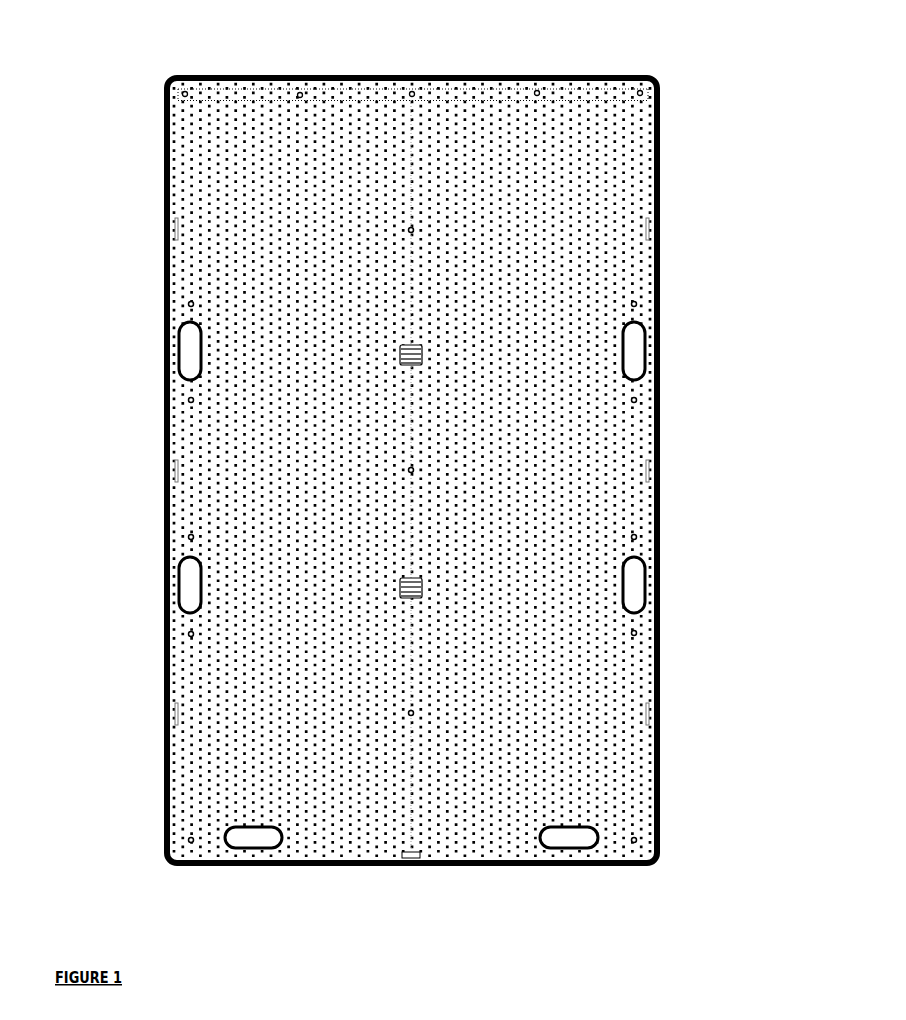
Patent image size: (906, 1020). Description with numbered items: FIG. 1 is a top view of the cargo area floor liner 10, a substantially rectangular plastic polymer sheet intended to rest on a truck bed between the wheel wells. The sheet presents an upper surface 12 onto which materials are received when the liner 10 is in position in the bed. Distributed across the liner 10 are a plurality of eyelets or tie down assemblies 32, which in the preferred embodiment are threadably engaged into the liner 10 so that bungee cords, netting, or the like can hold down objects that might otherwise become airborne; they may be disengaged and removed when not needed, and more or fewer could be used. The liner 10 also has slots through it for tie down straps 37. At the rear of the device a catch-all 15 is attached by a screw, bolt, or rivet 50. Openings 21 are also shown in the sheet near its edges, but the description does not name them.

The cargo area floor liner 10 is at (533, 224).
The upper surface 12 is at (527, 660).
The catch-all 15 is at (226, 96).
The screw, bolt, or rivet 50 is at (412, 95).
The eyelets / tie down assemblies 32 is at (189, 303).
The handle slots 21 is at (179, 585).
The slots through liner for tie down straps 37 is at (167, 468).